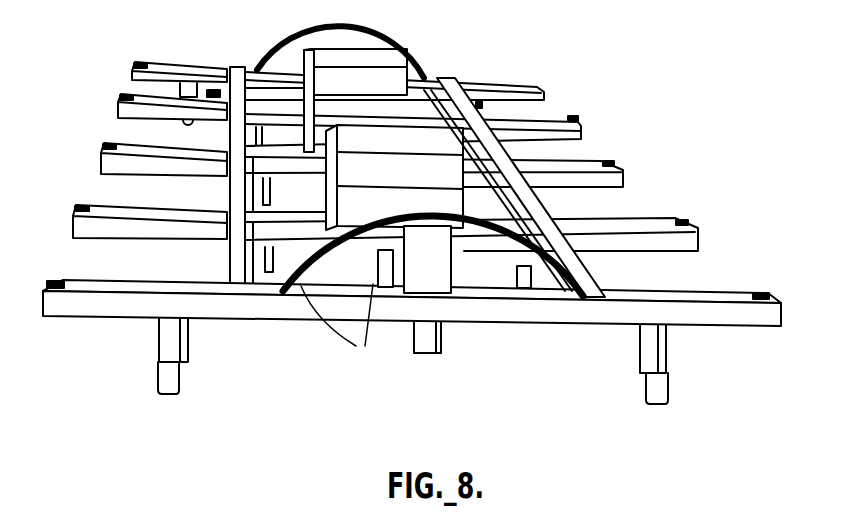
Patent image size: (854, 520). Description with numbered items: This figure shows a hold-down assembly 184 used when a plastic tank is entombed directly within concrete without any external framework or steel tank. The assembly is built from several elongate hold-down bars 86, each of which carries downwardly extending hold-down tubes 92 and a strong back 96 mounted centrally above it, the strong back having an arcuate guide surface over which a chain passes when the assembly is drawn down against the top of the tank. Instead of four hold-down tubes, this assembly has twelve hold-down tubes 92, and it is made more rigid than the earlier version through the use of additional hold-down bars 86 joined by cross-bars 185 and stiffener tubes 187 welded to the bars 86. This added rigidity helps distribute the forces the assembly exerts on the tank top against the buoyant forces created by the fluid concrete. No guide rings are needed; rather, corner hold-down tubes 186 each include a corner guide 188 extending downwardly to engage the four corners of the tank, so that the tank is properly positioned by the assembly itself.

The hold-down assembly 184 is at (412, 215).
The cross-bars 185 is at (233, 196).
The corner hold-down tubes 186 is at (157, 354).
The stiffener tubes 187 is at (378, 62).
The corner guide 188 is at (172, 386).
The hold-down bar 86 is at (502, 313).
The hold-down tubes 92 is at (412, 342).
The strong back 96 is at (500, 257).